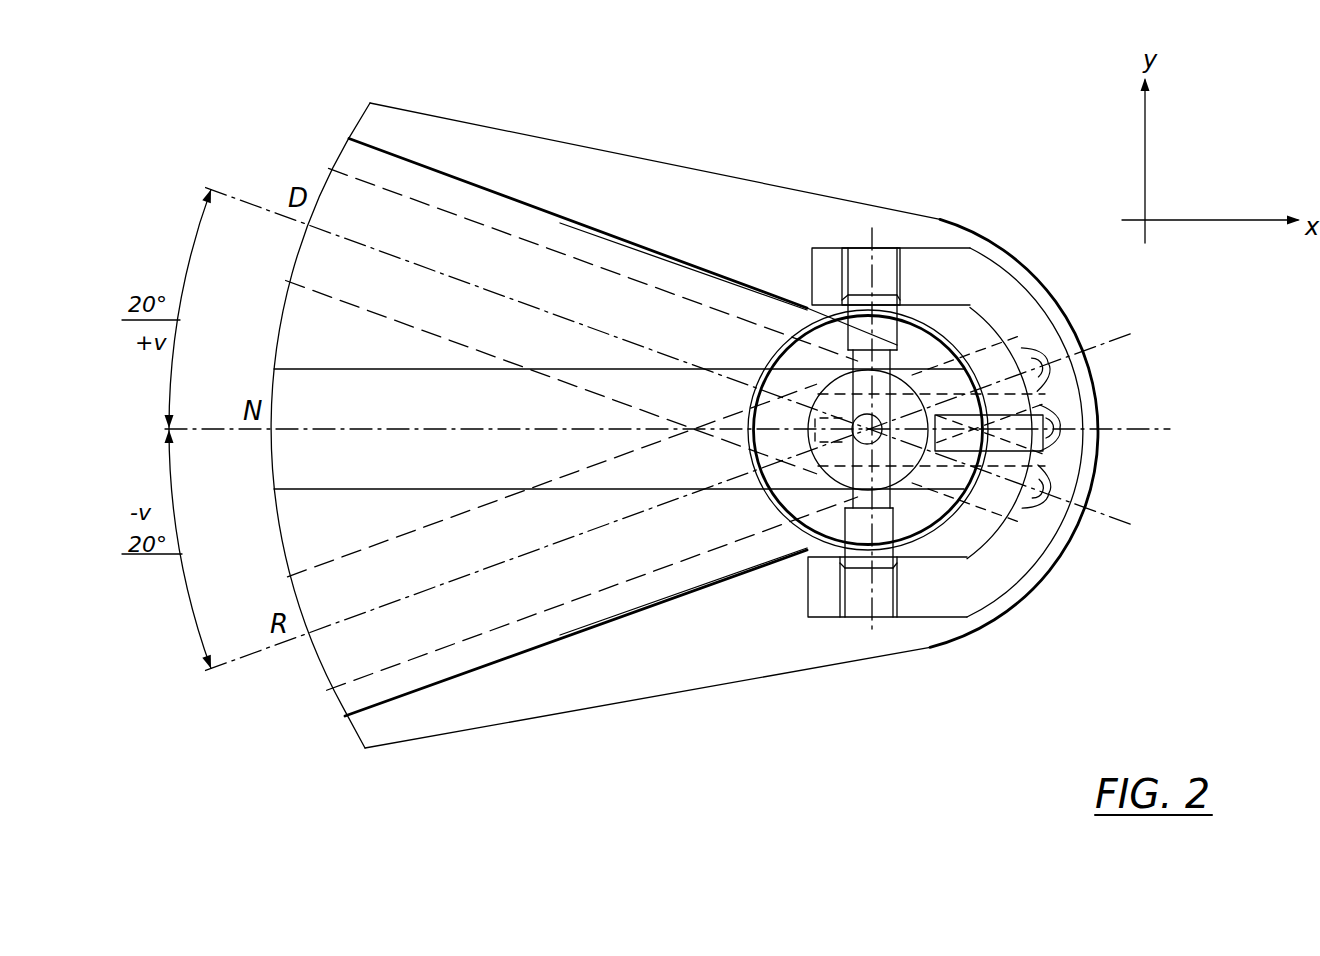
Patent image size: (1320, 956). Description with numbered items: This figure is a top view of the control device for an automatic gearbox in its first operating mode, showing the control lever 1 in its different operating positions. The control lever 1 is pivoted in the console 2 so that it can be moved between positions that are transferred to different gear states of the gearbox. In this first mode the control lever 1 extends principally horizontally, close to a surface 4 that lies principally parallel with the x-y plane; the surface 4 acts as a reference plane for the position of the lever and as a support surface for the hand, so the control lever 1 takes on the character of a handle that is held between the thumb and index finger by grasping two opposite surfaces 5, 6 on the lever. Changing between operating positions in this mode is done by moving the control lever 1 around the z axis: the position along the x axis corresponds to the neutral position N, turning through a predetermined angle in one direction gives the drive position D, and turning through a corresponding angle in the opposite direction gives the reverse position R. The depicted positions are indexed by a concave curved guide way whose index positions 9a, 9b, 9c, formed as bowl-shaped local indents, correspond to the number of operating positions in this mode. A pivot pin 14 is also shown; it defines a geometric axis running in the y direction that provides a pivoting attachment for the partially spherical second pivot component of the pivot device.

The control lever 1 is at (381, 500).
The console 2 is at (661, 150).
The surface 4 is at (437, 353).
The opposite surface 5 is at (407, 369).
The opposite surface 6 is at (320, 489).
The index position 9a is at (1055, 440).
The index position 9b is at (1060, 515).
The index position 9c is at (1050, 380).
The pivot pin 14 is at (907, 557).